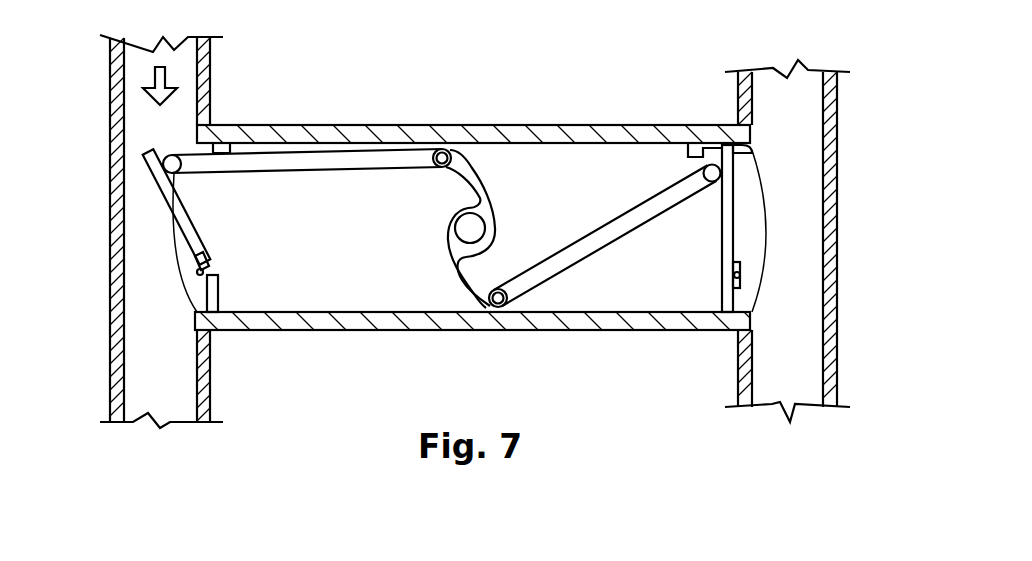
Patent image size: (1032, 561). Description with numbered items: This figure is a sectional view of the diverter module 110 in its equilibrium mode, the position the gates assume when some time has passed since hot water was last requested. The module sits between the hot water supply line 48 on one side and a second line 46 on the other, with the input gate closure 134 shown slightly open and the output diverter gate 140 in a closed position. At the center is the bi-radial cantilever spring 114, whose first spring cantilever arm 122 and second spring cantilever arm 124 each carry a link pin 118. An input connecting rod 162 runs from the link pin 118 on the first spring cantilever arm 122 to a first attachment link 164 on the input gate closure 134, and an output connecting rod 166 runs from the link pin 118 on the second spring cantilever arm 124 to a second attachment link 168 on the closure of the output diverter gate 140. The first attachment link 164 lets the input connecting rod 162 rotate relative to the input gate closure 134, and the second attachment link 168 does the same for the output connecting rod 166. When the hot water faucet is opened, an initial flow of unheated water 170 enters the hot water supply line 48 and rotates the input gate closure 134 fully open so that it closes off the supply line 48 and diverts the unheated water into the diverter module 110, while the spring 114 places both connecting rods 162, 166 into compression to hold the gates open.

The second duct wall 46 is at (738, 366).
The hot water supply line 48 is at (209, 378).
The diverter module 110 is at (578, 73).
The bi-radial cantilever spring 114 is at (467, 223).
The link pin 118 is at (442, 149).
The first spring cantilever arm 122 is at (484, 166).
The second spring cantilever arm 124 is at (460, 302).
The input gate closure 134 is at (192, 222).
The output diverter gate 140 is at (721, 235).
The input connecting rod 162 is at (278, 152).
The first attachment link 164 is at (172, 152).
The output connecting rod 166 is at (543, 290).
The second attachment link 168 is at (698, 145).
The unheated water 170 is at (205, 76).